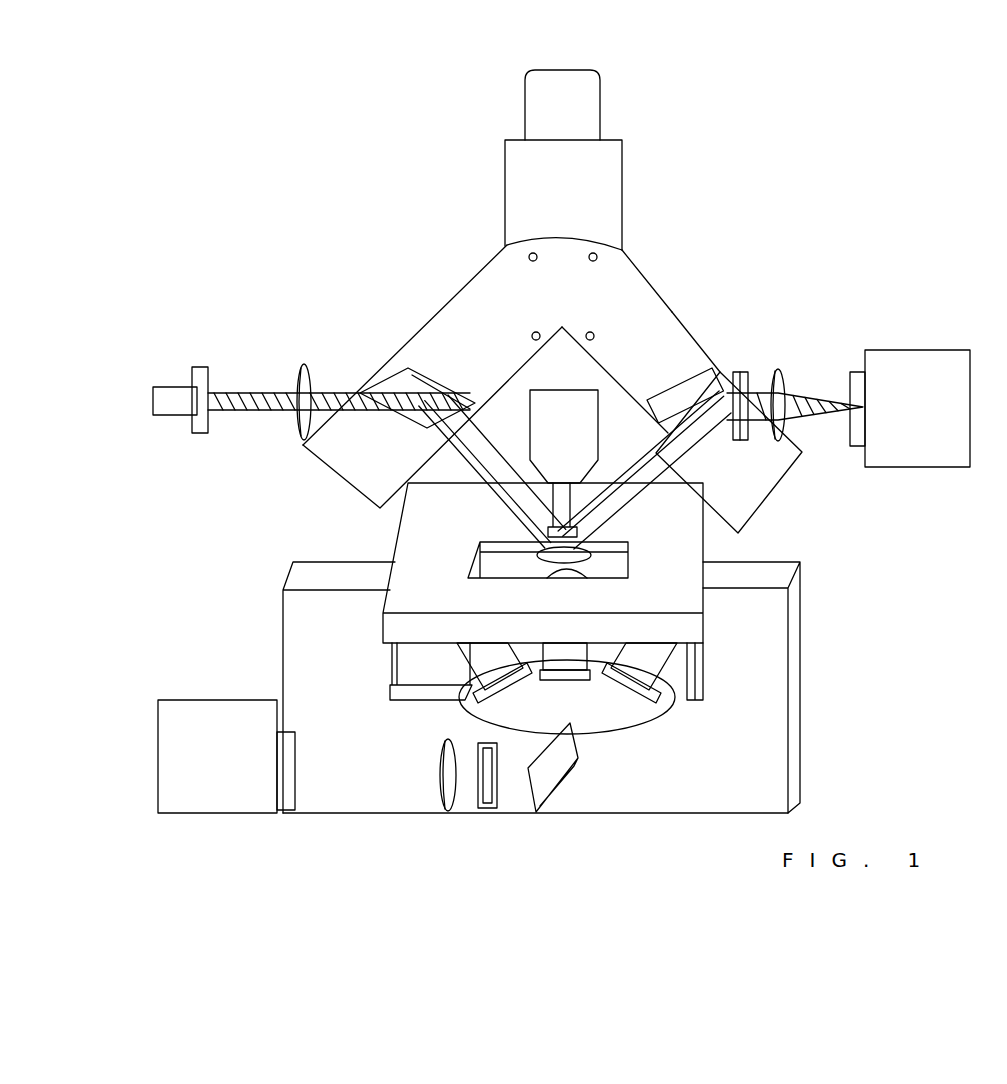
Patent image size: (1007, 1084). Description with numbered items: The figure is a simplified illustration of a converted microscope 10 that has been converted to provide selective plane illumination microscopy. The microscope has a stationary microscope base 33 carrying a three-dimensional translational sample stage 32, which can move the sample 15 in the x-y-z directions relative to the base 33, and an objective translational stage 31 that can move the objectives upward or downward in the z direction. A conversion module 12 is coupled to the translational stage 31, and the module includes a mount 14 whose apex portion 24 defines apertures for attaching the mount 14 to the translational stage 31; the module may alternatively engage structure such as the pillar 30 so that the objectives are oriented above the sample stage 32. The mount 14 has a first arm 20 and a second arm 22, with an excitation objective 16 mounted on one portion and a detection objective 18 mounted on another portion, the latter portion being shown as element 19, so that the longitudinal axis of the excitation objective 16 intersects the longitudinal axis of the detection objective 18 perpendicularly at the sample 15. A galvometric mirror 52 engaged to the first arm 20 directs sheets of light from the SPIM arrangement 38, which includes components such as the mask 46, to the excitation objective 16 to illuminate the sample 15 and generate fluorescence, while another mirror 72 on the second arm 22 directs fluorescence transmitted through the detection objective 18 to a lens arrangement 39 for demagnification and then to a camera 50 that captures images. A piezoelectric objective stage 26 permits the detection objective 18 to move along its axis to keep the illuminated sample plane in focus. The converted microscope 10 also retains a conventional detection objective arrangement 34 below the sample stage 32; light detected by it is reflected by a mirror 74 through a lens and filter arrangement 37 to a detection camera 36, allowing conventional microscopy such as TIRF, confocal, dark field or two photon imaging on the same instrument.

The converted microscope 10 is at (806, 213).
The conversion module 12 is at (402, 324).
The mount 14 is at (690, 322).
The sample 15 is at (600, 557).
The excitation objective 16 is at (465, 487).
The detection objective 18 is at (600, 542).
The head housing 19 is at (647, 270).
The first arm 20 is at (442, 310).
The second arm 22 is at (684, 300).
The apex portion 24 is at (562, 238).
The piezoelectric objective stage 26 is at (682, 493).
The pillar 30 is at (605, 100).
The objective translational stage 31 is at (522, 178).
The three-dimensional translational sample stage 32 is at (690, 597).
The microscope base 33 is at (797, 772).
The conventional detection objective arrangement 34 is at (665, 680).
The detection camera 36 is at (218, 700).
The lens and filter arrangement 37 is at (402, 824).
The SPIM arrangement 38 is at (195, 325).
The lens arrangement 39 is at (762, 364).
The mask 46 is at (197, 357).
The detection camera 50 is at (908, 468).
The galvometric mirror 52 is at (395, 374).
The mirror 72 is at (700, 390).
The mirror 74 is at (574, 778).